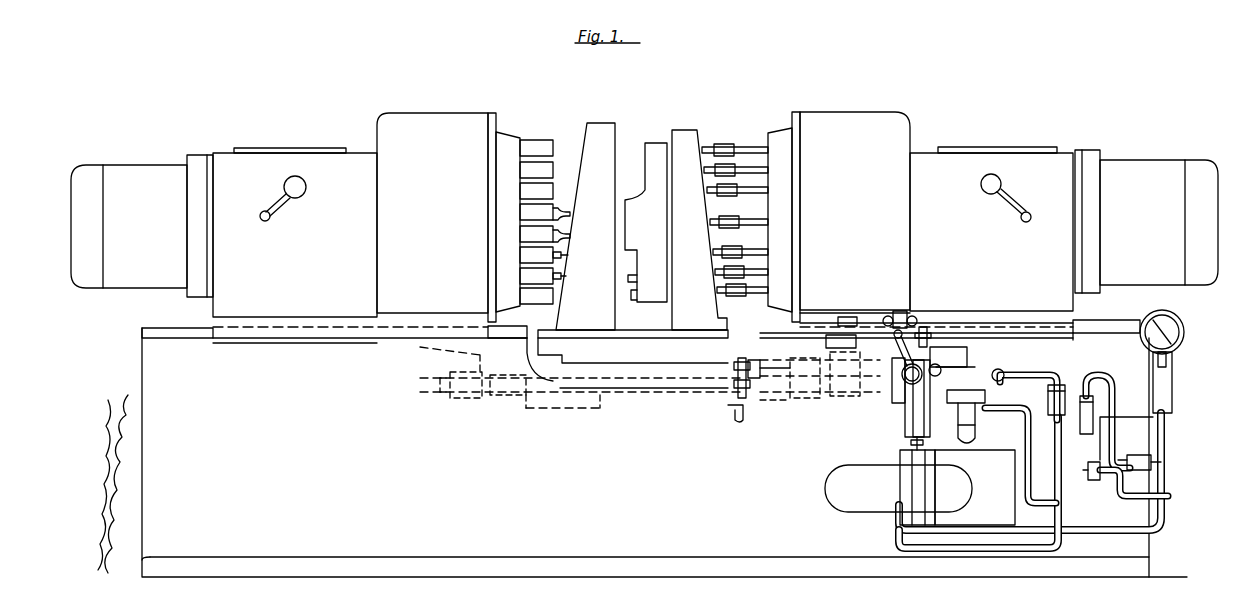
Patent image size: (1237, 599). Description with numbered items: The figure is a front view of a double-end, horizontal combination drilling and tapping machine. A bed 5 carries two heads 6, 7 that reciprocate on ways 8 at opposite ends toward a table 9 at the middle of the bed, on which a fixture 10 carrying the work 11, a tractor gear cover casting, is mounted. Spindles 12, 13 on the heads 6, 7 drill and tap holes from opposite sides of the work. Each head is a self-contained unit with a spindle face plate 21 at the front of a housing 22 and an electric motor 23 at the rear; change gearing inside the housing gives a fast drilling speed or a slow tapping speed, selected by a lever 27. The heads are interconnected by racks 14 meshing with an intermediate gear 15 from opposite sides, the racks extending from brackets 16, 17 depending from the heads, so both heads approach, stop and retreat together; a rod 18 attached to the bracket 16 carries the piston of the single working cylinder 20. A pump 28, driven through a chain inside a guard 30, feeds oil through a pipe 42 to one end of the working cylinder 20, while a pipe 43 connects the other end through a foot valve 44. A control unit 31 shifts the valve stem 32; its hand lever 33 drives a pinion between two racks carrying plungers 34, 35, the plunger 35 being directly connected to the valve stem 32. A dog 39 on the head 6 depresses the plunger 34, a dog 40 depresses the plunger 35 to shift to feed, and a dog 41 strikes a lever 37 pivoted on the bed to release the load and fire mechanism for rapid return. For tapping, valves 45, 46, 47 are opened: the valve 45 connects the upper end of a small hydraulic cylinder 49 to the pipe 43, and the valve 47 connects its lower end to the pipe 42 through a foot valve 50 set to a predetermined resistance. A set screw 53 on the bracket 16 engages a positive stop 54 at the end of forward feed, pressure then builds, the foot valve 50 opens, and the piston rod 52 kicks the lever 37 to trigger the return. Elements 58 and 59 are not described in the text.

The bed 5 is at (142, 433).
The head 6 is at (866, 120).
The head 7 is at (460, 112).
The ways 8 is at (180, 327).
The table 9 is at (741, 330).
The fixture 10 is at (690, 128).
The work 11 is at (653, 140).
The spindles 12 is at (752, 135).
The spindles 13 is at (532, 235).
The racks 14 is at (514, 400).
The intermediate gear 15 is at (661, 364).
The bracket 16 is at (810, 400).
The bracket 17 is at (462, 400).
The rod 18 is at (852, 398).
The working cylinder 20 is at (1173, 387).
The spindle face plate 21 is at (494, 133).
The housing 22 is at (386, 130).
The electric motor 23 is at (141, 168).
The lever 27 is at (278, 199).
The pump 28 is at (975, 487).
The guard 30 is at (858, 513).
The control unit 31 is at (902, 415).
The valve stem 32 is at (908, 442).
The hand lever 33 is at (904, 368).
The plunger 34 is at (895, 358).
The plunger 35 is at (920, 338).
The lever 37 is at (951, 368).
The dog 39 is at (832, 330).
The dog 40 is at (916, 326).
The dog 41 is at (987, 338).
The pipe 42 is at (1097, 531).
The pipe 43 is at (1062, 547).
The foot valve 44 is at (1066, 388).
The valve 45 is at (1020, 410).
The valve 46 is at (716, 396).
The valve 47 is at (1152, 460).
The hydraulic cylinder 49 is at (958, 418).
The foot valve 50 is at (1094, 402).
The rod 52 is at (1003, 373).
The set screw 53 is at (761, 362).
The positive stop 54 is at (712, 372).
The pipe 58 is at (1170, 495).
The pipe 59 is at (1128, 418).